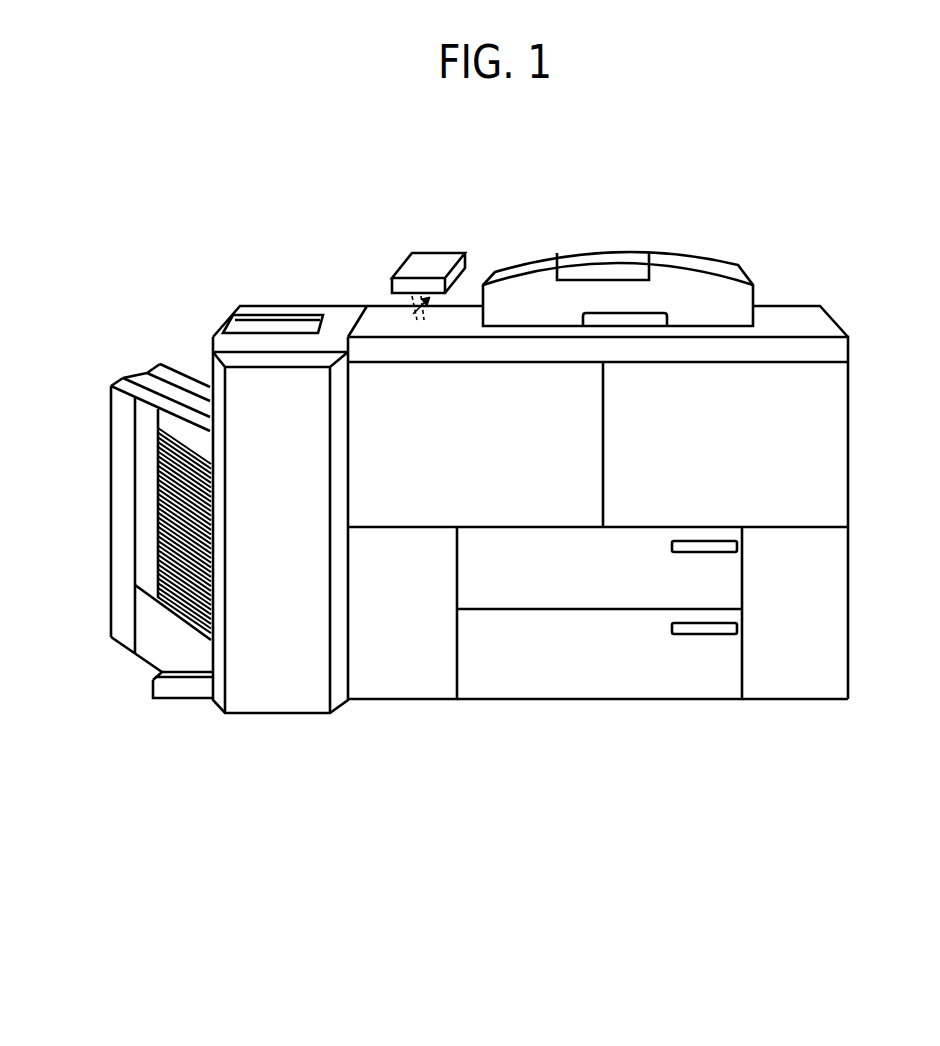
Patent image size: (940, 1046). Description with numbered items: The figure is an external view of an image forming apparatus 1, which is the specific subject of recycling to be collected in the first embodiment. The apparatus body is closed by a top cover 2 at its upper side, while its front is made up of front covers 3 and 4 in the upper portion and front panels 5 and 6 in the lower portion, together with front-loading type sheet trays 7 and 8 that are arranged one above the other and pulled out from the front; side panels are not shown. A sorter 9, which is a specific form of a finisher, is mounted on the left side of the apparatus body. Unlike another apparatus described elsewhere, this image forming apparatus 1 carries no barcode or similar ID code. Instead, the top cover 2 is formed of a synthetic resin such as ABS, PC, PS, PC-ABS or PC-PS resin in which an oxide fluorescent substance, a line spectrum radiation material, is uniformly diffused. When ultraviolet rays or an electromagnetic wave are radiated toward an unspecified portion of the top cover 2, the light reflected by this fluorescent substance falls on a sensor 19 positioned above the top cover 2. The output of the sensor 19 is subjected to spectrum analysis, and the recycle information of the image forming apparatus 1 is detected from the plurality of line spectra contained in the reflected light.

The image forming apparatus 1 is at (795, 238).
The top cover 2 is at (836, 350).
The front cover 3 is at (473, 512).
The front cover 4 is at (835, 452).
The front panel 5 is at (400, 687).
The front panel 6 is at (836, 614).
The sheet tray 7 is at (558, 590).
The sheet tray 8 is at (653, 687).
The sorter 9 is at (123, 352).
The sensor 19 is at (423, 252).